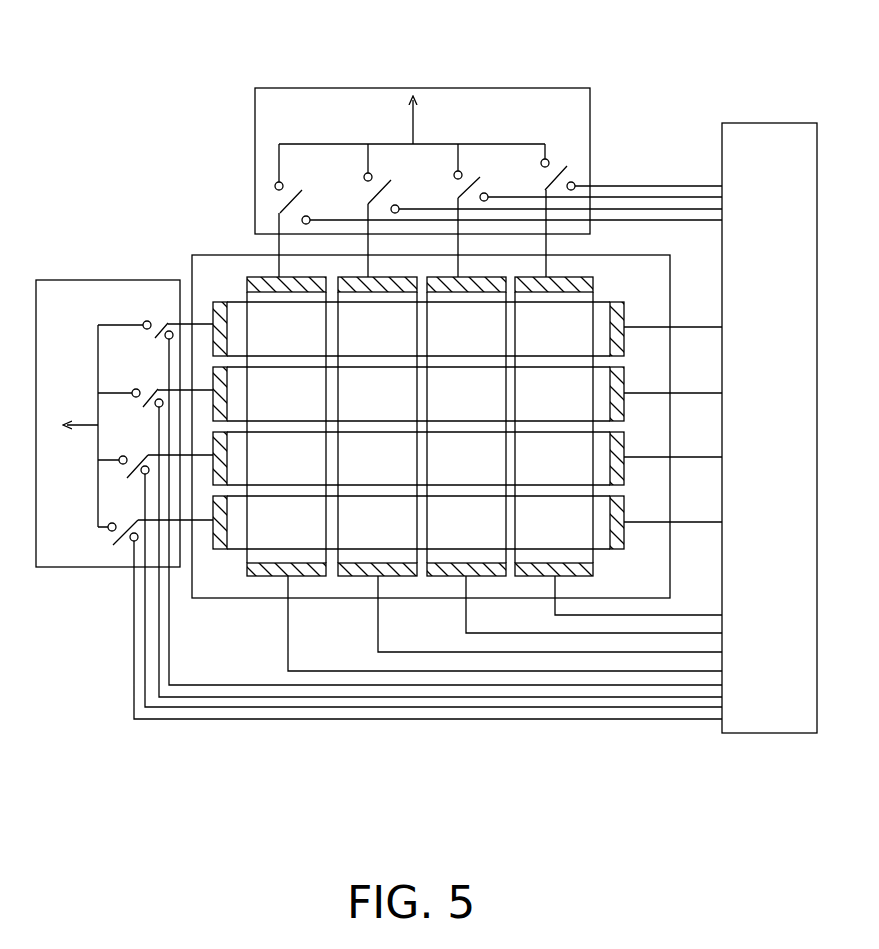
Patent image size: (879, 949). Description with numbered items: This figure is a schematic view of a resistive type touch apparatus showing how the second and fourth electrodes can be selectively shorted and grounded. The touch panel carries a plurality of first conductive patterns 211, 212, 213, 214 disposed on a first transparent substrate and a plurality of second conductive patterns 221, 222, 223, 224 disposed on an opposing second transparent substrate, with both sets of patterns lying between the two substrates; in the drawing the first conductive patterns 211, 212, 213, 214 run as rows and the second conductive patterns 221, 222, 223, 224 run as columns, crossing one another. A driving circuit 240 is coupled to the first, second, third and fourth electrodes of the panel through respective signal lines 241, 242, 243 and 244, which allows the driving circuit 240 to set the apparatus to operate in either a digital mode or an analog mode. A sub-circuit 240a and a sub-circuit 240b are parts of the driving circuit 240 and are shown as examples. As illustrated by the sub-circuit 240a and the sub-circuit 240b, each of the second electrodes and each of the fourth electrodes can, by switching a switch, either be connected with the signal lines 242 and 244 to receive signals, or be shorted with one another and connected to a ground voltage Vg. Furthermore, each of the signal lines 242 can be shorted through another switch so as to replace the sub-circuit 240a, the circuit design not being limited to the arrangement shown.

The first conductive pattern 211 is at (603, 302).
The first conductive pattern 212 is at (607, 365).
The first conductive pattern 213 is at (607, 430).
The first conductive pattern 214 is at (607, 494).
The second conductive pattern 221 is at (535, 558).
The second conductive pattern 222 is at (443, 558).
The second conductive pattern 223 is at (359, 558).
The second conductive pattern 224 is at (263, 558).
The driving circuit 240 is at (770, 123).
The sub-circuit 240a is at (543, 88).
The sub-circuit 240b is at (108, 280).
The signal lines 241 is at (697, 523).
The signal lines 242 is at (193, 698).
The signal lines 243 is at (638, 618).
The signal lines 244 is at (663, 186).